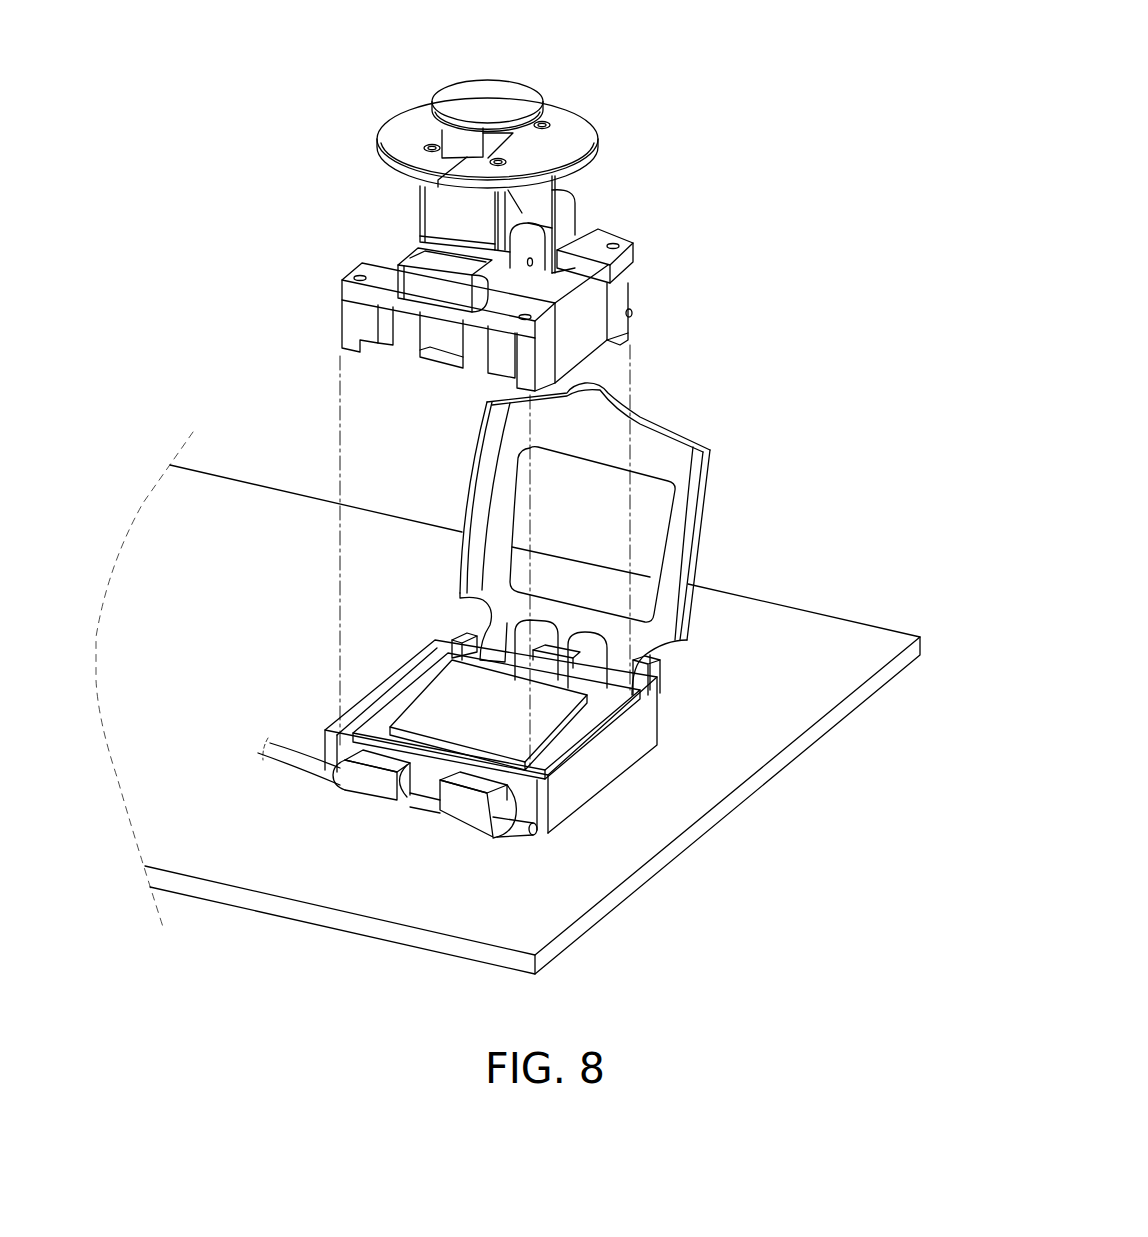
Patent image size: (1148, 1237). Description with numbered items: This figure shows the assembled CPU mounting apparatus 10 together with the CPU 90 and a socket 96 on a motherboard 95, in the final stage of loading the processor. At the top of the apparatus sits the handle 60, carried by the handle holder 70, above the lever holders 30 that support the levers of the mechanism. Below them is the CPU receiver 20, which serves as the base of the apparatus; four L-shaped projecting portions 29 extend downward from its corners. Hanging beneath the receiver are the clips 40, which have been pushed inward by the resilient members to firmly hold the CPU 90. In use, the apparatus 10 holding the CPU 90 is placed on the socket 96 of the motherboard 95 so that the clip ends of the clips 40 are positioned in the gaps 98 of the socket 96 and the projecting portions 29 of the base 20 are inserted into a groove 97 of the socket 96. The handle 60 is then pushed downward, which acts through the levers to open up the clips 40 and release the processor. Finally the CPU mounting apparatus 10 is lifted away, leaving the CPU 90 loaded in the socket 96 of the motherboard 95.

The CPU mounting apparatus 10 is at (432, 34).
The CPU receiver 20 is at (577, 307).
The projecting portion 29 is at (623, 313).
The lever holder 30 is at (570, 228).
The clip 40 is at (445, 341).
The handle 60 is at (512, 92).
The handle holder 70 is at (573, 127).
The CPU 90 is at (442, 697).
The motherboard 95 is at (817, 637).
The socket 96 is at (577, 788).
The groove 97 is at (623, 695).
The gap 98 is at (440, 773).